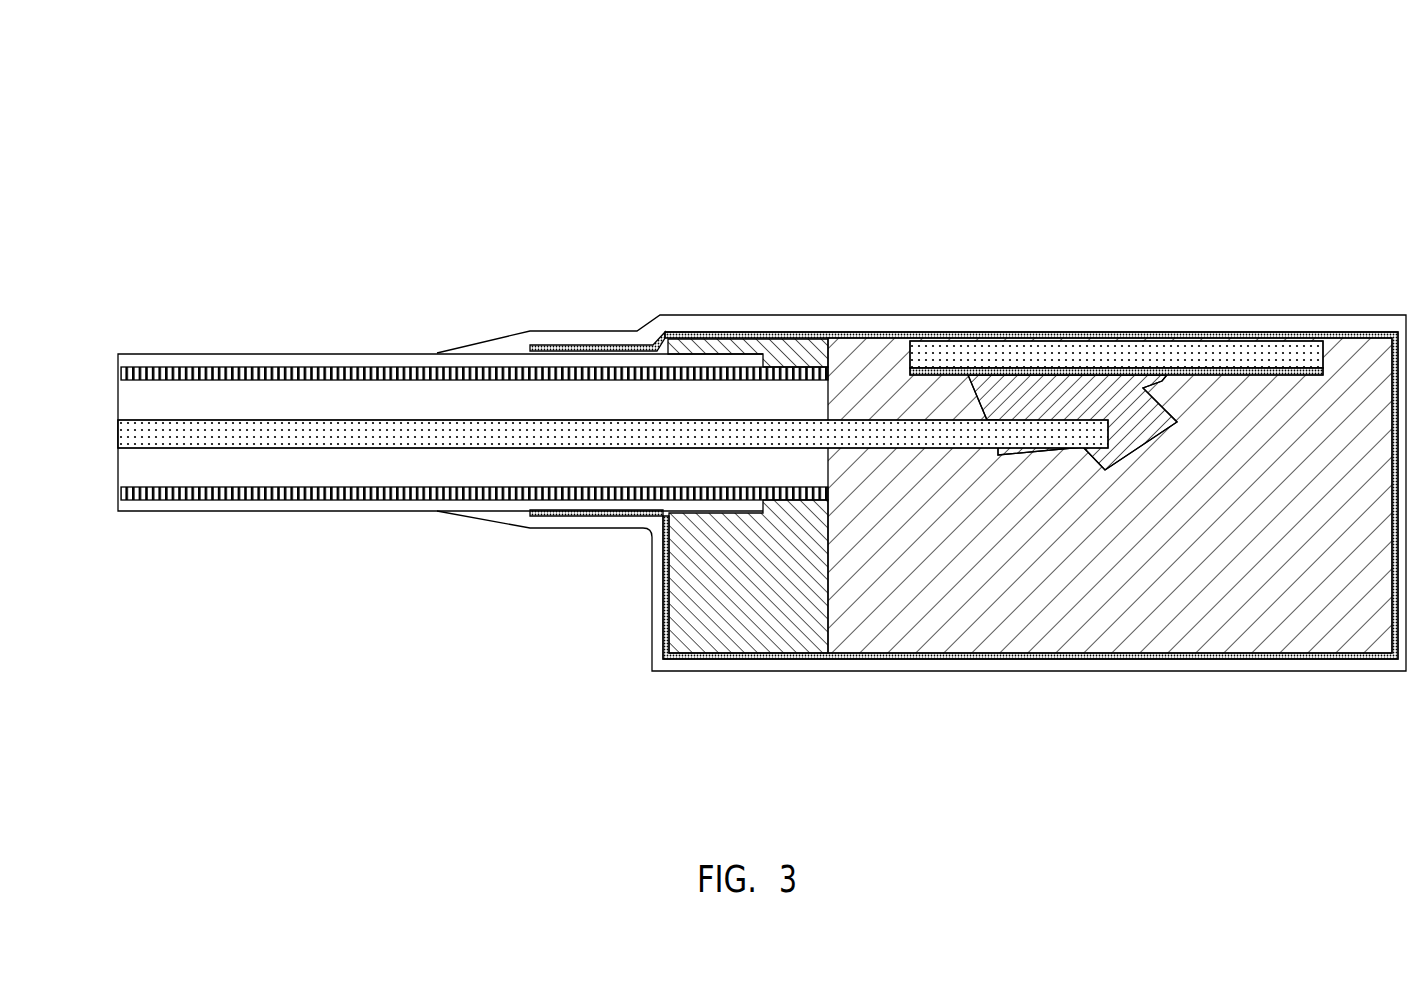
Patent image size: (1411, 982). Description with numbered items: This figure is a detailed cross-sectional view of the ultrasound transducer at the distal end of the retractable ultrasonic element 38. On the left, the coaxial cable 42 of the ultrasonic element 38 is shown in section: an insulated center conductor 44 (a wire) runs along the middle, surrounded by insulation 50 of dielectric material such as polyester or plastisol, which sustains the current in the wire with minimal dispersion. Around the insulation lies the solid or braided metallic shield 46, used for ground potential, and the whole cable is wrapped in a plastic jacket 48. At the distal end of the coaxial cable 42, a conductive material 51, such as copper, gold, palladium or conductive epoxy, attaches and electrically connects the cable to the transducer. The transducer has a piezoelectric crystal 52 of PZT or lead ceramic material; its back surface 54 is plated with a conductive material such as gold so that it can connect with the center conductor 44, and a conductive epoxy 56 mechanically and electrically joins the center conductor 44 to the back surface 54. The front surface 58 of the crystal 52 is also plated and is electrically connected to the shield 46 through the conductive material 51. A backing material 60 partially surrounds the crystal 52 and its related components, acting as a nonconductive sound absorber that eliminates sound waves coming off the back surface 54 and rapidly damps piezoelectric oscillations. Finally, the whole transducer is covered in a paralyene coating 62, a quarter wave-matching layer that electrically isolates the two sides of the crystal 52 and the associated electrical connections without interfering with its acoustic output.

The ultrasonic element 38 is at (762, 389).
The coaxial cable 42 is at (613, 432).
The center conductor 44 is at (390, 452).
The metallic shield 46 is at (288, 500).
The jacket 48 is at (207, 513).
The insulation 50 is at (337, 468).
The conductive material 51 is at (727, 628).
The piezoelectric crystal 52 is at (1243, 355).
The back surface 54 is at (1255, 378).
The conductive epoxy 56 is at (1133, 440).
The front surface 58 is at (1163, 332).
The backing material 60 is at (895, 622).
The paralyene coating 62 is at (658, 315).